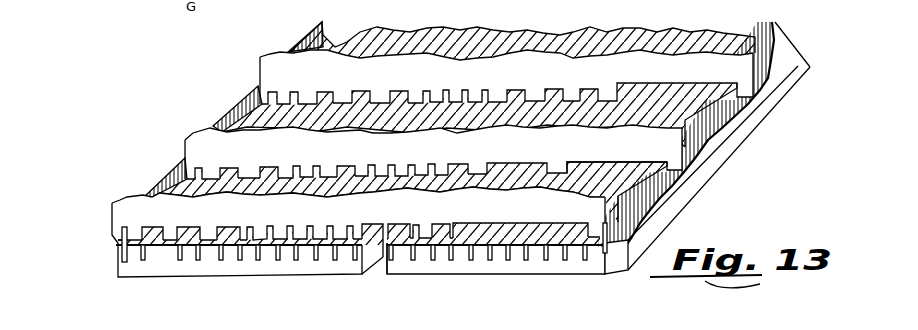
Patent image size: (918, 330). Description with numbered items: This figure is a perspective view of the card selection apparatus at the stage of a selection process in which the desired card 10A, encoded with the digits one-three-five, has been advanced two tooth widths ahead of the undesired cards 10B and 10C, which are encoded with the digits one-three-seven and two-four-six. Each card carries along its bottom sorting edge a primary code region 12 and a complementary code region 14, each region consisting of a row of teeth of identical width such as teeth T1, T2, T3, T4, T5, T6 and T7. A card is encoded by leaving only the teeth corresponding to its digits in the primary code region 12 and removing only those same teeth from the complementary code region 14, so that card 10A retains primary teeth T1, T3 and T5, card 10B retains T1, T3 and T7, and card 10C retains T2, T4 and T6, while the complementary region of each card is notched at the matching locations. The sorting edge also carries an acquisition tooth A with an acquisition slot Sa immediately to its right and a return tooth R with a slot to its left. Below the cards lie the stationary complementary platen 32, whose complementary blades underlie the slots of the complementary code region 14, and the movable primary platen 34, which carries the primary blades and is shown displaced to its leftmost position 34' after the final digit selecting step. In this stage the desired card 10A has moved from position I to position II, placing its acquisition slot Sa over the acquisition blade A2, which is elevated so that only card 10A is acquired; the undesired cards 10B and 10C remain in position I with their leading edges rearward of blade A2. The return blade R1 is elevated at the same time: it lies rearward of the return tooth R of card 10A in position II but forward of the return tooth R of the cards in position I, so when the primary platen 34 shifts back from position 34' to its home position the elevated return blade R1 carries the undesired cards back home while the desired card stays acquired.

The card 10A is at (118, 201).
The card 10B is at (197, 129).
The card 10C is at (247, 57).
The primary code region 12 is at (520, 221).
The complementary code region 14 is at (300, 223).
The complementary platen 32 is at (244, 275).
The primary platen 34 is at (507, 271).
The leftmost position of primary platen 34' is at (397, 272).
The acquisition tooth A is at (265, 92).
The acquisition blade A2 is at (300, 32).
The card position I is at (258, 76).
The card position II is at (105, 232).
The return tooth R is at (743, 83).
The return blade R1 is at (608, 251).
The acquisition slot Sa is at (127, 222).
The code tooth T1 is at (160, 224).
The code tooth T2 is at (428, 88).
The code tooth T3 is at (195, 224).
The code tooth T4 is at (466, 88).
The code tooth T5 is at (235, 224).
The code tooth T6 is at (503, 88).
The code tooth T7 is at (502, 163).